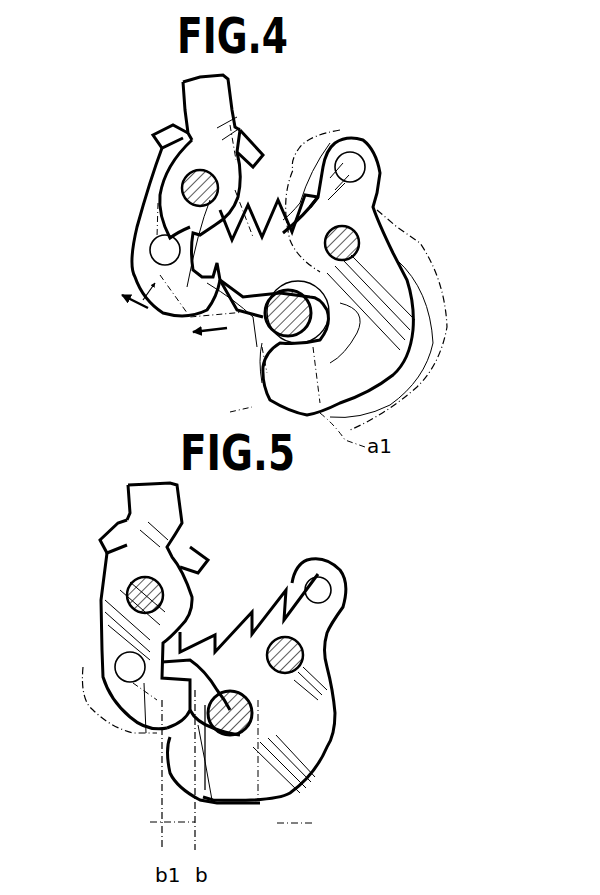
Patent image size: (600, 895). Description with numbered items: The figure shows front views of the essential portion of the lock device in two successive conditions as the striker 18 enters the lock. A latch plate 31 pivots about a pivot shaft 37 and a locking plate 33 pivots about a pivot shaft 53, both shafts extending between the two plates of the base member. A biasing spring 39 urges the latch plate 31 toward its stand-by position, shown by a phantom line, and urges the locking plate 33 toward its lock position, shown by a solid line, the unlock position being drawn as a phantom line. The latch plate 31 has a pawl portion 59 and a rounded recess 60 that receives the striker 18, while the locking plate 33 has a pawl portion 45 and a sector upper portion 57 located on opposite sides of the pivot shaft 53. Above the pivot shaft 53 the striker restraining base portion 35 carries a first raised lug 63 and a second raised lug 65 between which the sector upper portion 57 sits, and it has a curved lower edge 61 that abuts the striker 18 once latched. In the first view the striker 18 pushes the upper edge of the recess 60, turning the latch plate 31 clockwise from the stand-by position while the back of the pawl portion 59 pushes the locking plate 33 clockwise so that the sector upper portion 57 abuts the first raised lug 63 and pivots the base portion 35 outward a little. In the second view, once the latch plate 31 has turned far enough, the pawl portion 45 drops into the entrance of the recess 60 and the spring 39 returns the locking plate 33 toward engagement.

In FIG. 4, the striker 18 is at (328, 330).
In FIG. 5, the striker 18 is at (255, 713).
In FIG. 4, the latch plate 31 is at (408, 370).
In FIG. 5, the latch plate 31 is at (308, 770).
In FIG. 4, the locking plate 33 is at (143, 300).
In FIG. 5, the locking plate 33 is at (97, 660).
In FIG. 4, the striker restraining base portion 35 is at (280, 253).
In FIG. 5, the striker restraining base portion 35 is at (200, 655).
In FIG. 4, the pivot shaft 37 is at (358, 230).
In FIG. 5, the pivot shaft 37 is at (305, 655).
In FIG. 4, the biasing spring 39 is at (372, 205).
In FIG. 5, the biasing spring 39 is at (262, 590).
In FIG. 4, the pawl portion 45 is at (190, 323).
In FIG. 5, the pawl portion 45 is at (150, 730).
In FIG. 4, the pivot shaft 53 is at (182, 187).
In FIG. 5, the pivot shaft 53 is at (145, 595).
In FIG. 4, the sector upper portion 57 is at (220, 140).
In FIG. 5, the sector upper portion 57 is at (126, 530).
In FIG. 4, the pawl portion 59 is at (190, 268).
In FIG. 5, the pawl portion 59 is at (130, 667).
In FIG. 4, the rounded recess 60 is at (226, 250).
In FIG. 4, the curved lower edge 61 is at (260, 343).
In FIG. 5, the curved lower edge 61 is at (212, 800).
In FIG. 4, the first raised lug 63 is at (262, 148).
In FIG. 5, the first raised lug 63 is at (203, 556).
In FIG. 4, the second raised lug 65 is at (168, 125).
In FIG. 5, the second raised lug 65 is at (108, 541).